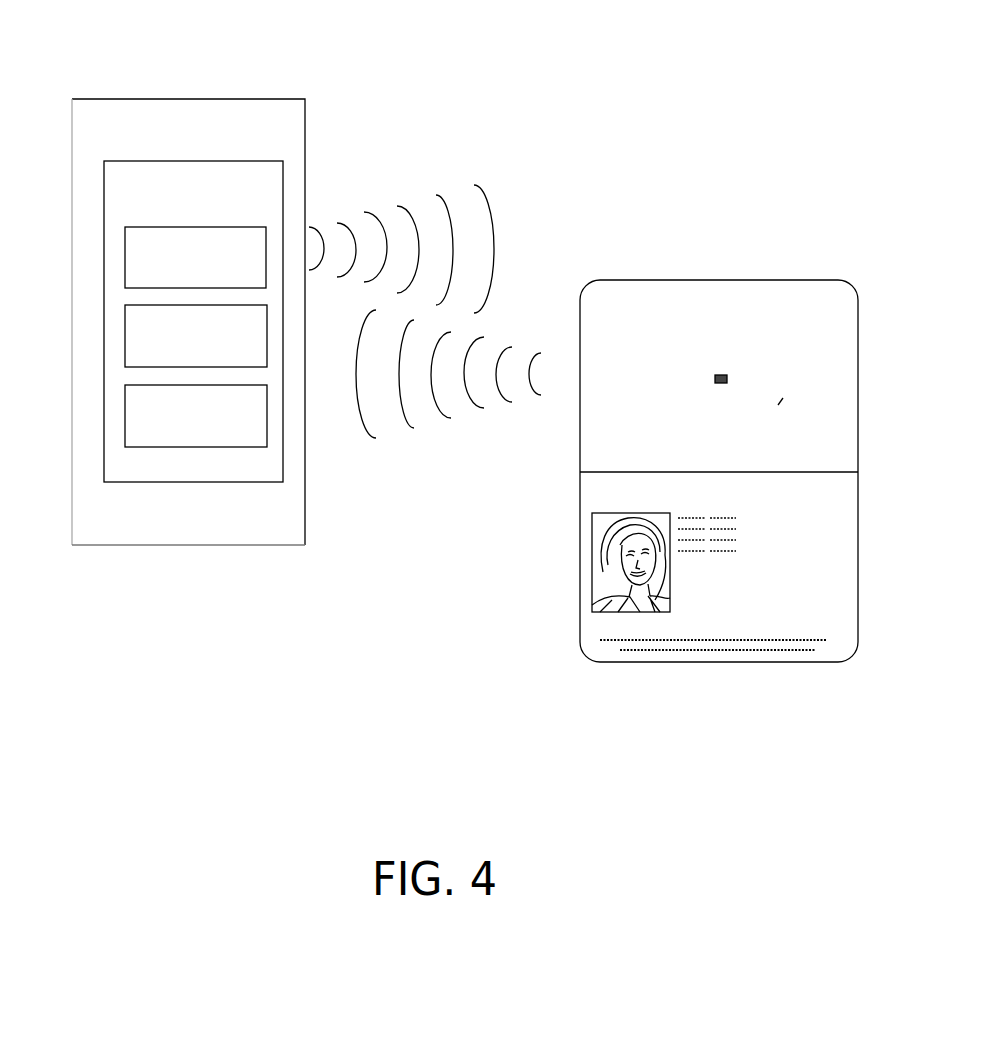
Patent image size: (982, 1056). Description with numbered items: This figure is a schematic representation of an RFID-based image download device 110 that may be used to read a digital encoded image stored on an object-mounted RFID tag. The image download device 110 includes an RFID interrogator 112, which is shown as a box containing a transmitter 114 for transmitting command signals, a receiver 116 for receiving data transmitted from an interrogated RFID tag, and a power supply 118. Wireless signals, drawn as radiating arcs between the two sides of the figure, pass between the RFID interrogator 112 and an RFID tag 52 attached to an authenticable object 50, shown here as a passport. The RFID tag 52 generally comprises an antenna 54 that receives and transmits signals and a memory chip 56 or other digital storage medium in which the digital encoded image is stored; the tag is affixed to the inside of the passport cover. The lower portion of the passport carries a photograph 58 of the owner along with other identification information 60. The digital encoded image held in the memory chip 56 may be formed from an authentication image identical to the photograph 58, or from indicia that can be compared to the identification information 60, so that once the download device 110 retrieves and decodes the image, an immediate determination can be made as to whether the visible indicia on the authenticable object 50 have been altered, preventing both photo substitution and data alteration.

The authenticable object 50 is at (617, 663).
The RFID tag 52 is at (645, 407).
The antenna 54 is at (727, 338).
The memory chip 56 is at (723, 378).
The photograph 58 is at (592, 592).
The identification information 60 is at (775, 528).
The image download device 110 is at (227, 99).
The RFID interrogator 112 is at (150, 482).
The transmitter 114 is at (125, 258).
The receiver 116 is at (123, 340).
The power supply 118 is at (123, 418).